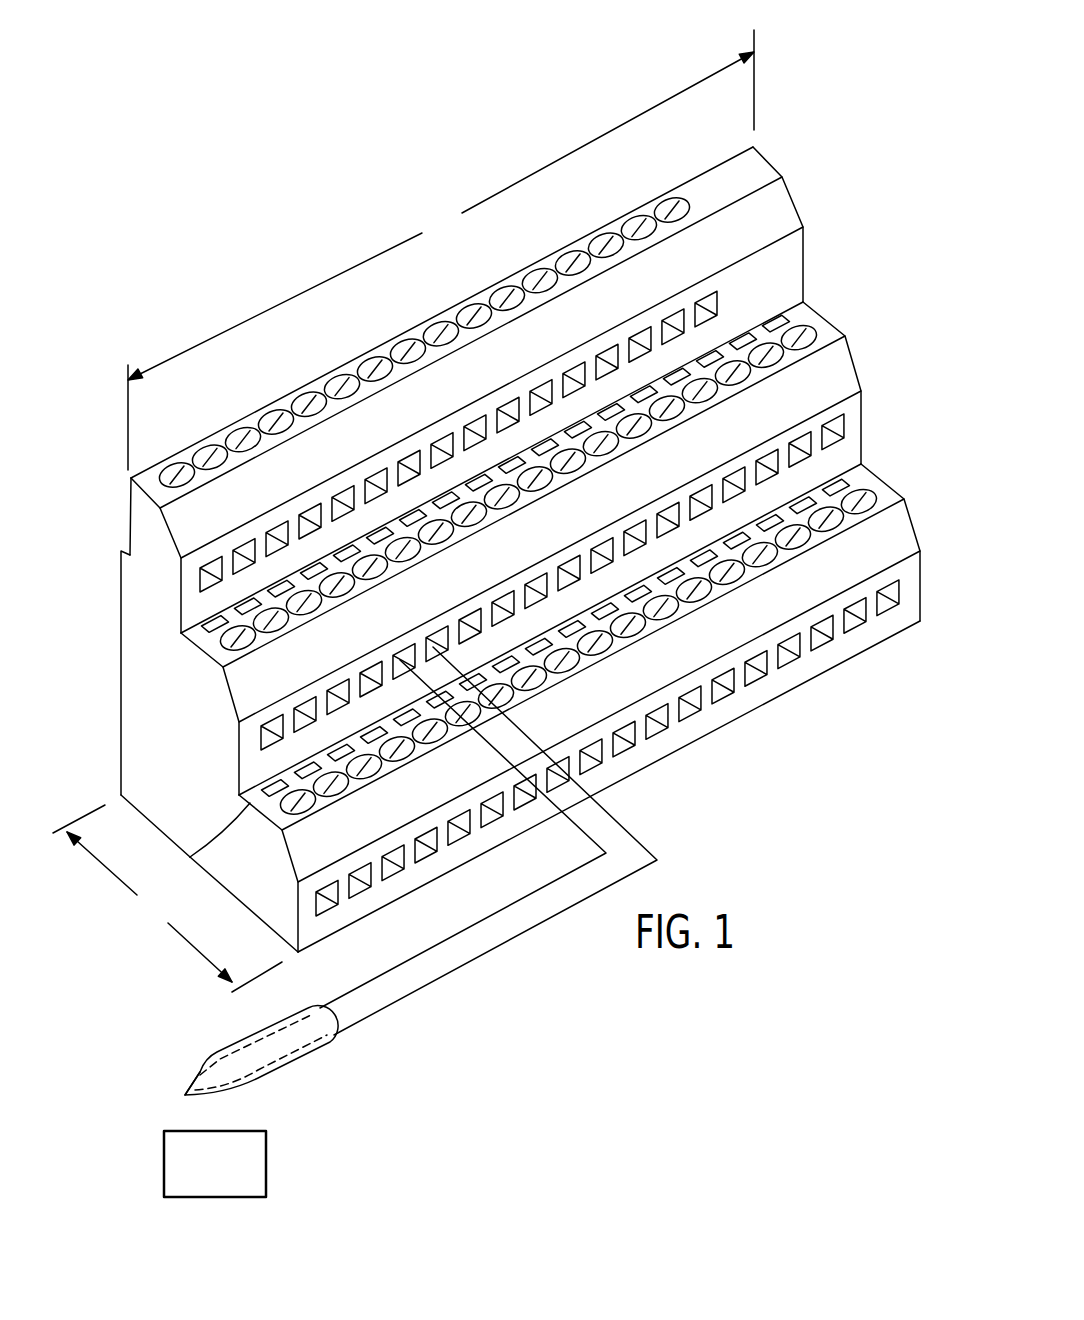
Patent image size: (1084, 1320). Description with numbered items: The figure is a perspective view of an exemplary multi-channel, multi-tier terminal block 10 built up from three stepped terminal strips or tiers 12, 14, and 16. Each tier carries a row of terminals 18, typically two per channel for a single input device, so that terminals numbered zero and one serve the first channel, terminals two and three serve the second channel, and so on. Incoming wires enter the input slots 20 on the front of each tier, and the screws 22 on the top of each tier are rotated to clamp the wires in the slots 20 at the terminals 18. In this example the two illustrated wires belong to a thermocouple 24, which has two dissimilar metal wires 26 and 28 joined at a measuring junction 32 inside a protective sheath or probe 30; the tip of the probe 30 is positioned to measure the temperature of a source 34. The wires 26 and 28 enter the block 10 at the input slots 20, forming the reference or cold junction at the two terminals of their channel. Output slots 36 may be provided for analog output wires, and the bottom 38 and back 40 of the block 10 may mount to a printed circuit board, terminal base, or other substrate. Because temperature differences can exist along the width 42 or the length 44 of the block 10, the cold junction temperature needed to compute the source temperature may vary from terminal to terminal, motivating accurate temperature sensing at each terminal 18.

The multi-tier terminal block 10 is at (887, 155).
The terminal strip or tier 12 is at (766, 160).
The terminal strip or tier 14 is at (820, 322).
The terminal strip or tier 16 is at (868, 478).
The terminals 18 is at (292, 452).
The input slots 20 is at (362, 893).
The screws 22 is at (493, 287).
The thermocouple 24 is at (213, 1043).
The thermocouple wire 26 is at (492, 920).
The thermocouple wire 28 is at (489, 948).
The protective sheath or probe 30 is at (292, 1072).
The measuring junction 32 is at (199, 1091).
The source 34 is at (266, 1163).
The output slots 36 is at (187, 857).
The bottom 38 is at (242, 910).
The back 40 is at (117, 665).
The width 42 is at (167, 898).
The length 44 is at (441, 250).